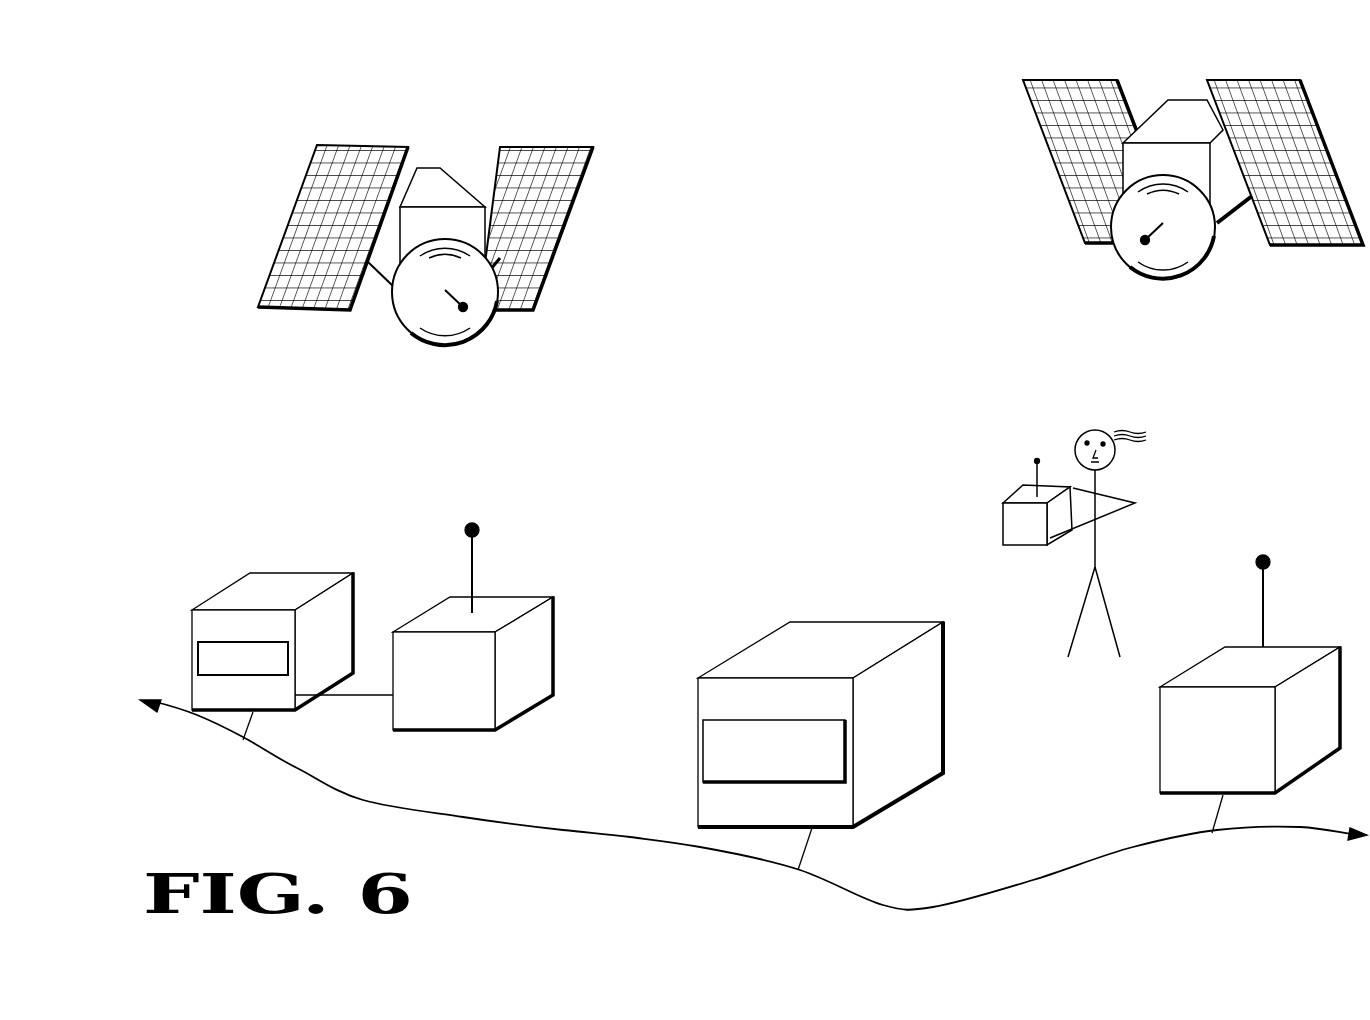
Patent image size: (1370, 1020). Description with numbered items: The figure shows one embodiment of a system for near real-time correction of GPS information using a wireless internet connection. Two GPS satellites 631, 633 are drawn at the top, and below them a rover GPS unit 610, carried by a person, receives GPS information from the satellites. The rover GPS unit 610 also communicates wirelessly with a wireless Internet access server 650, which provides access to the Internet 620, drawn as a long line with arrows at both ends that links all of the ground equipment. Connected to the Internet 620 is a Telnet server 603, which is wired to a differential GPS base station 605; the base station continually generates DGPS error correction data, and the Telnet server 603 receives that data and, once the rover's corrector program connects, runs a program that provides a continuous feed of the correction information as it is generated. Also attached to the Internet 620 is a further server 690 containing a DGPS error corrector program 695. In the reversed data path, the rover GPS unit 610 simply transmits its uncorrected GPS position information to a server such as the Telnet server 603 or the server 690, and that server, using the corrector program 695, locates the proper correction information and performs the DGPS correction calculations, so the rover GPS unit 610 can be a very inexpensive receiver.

The GPS satellite 631 is at (437, 170).
The GPS satellite 633 is at (1192, 108).
The Telnet server 603 is at (290, 704).
The differential GPS base station 605 is at (492, 726).
The rover GPS unit 610 is at (1008, 518).
The Internet 620 is at (573, 831).
The wireless Internet access server 650 is at (1268, 788).
The server 690 is at (789, 724).
The DGPS error corrector program 695 is at (712, 757).